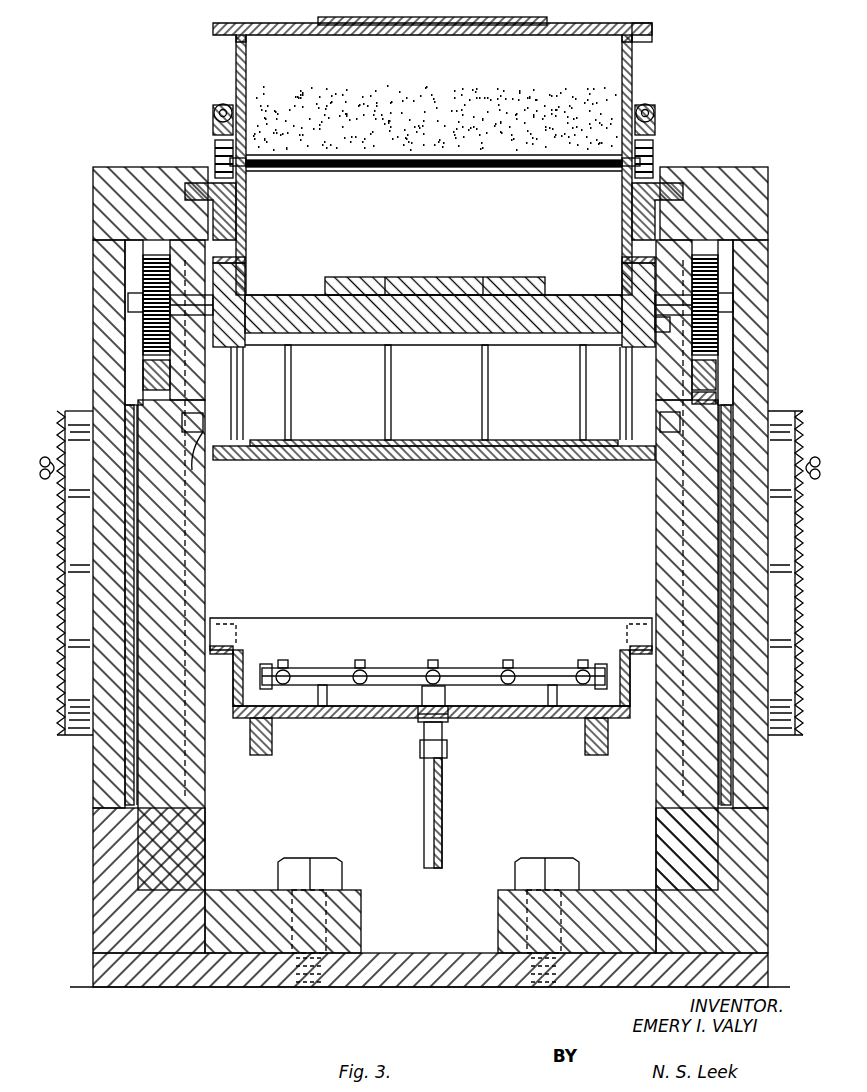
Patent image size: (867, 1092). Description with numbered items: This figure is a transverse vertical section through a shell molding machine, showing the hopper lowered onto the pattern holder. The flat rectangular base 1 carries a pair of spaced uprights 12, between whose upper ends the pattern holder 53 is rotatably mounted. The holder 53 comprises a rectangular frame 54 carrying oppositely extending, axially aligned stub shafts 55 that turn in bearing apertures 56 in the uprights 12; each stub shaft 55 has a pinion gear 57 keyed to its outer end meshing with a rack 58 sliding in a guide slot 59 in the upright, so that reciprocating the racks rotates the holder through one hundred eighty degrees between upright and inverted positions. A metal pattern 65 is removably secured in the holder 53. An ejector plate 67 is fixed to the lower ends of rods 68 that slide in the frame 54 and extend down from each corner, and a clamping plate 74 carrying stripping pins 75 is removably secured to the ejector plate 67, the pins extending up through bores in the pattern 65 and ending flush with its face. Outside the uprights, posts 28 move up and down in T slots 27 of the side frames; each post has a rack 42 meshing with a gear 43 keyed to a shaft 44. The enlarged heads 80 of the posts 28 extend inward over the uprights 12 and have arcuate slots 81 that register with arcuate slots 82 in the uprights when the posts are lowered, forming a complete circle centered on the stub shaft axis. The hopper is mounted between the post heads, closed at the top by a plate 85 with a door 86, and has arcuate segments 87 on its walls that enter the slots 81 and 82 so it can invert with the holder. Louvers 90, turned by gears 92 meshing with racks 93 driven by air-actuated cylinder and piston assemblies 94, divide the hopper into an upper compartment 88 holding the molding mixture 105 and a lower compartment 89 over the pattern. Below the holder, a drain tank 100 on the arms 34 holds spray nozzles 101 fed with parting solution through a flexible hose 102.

The base 1 is at (93, 955).
The uprights 12 is at (195, 549).
The T slots 27 is at (125, 590).
The posts 28 is at (140, 318).
The arms 34 is at (273, 742).
The rack 42 is at (58, 736).
The gear 43 is at (58, 500).
The shaft 44 is at (46, 455).
The pattern holder 53 is at (364, 356).
The rectangular frame 54 is at (247, 297).
The stub shafts 55 is at (140, 302).
The bearing apertures 56 is at (658, 330).
The pinion gear 57 is at (143, 342).
The rack 58 is at (143, 378).
The guide slot 59 is at (716, 398).
The metal pattern 65 is at (446, 277).
The ejector plate 67 is at (432, 462).
The rods 68 is at (242, 405).
The clamping plate 74 is at (340, 440).
The stripping pins 75 is at (478, 392).
The heads 80 is at (113, 167).
The arcuate slots 81 is at (192, 183).
The arcuate slots 82 is at (206, 476).
The plate 85 is at (432, 40).
The door 86 is at (392, 28).
The arcuate segments 87 is at (246, 190).
The upper compartment 88 is at (605, 57).
The lower compartment 89 is at (511, 218).
The louvers 90 is at (404, 171).
The gears 92 is at (212, 152).
The racks 93 is at (212, 125).
The air-actuated cylinder and piston assemblies 94 is at (220, 103).
The drain tank 100 is at (435, 632).
The spray nozzles 101 is at (287, 665).
The flexible hose 102 is at (445, 806).
The molding mixture 105 is at (495, 100).